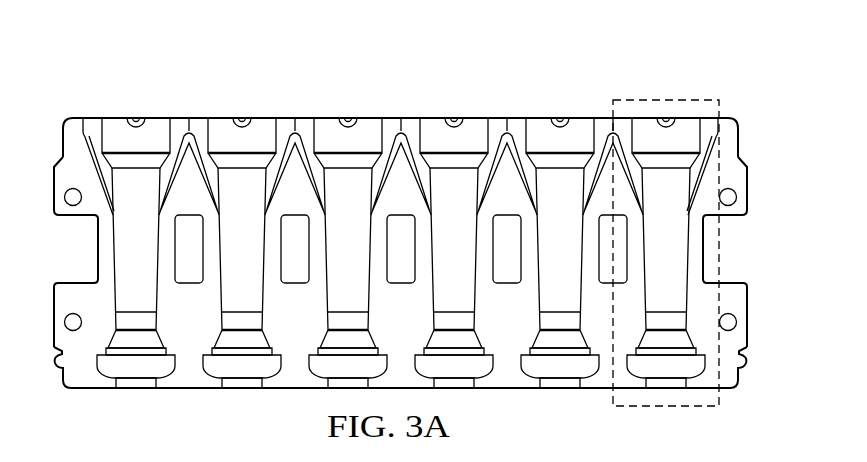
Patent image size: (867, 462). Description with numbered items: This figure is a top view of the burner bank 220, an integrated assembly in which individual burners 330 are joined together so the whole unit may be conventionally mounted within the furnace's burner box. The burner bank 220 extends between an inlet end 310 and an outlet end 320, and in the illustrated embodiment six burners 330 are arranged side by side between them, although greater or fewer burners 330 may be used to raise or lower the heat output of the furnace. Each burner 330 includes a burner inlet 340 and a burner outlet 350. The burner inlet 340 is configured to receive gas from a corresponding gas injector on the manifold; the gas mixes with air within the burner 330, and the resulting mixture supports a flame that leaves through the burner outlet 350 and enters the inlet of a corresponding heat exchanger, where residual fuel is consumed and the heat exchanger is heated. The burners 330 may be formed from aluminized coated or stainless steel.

The burner bank 220 is at (228, 48).
The inlet end 310 is at (748, 392).
The outlet end 320 is at (746, 118).
The burner 330 is at (665, 98).
The burner inlet 340 is at (242, 390).
The burner outlet 350 is at (350, 117).